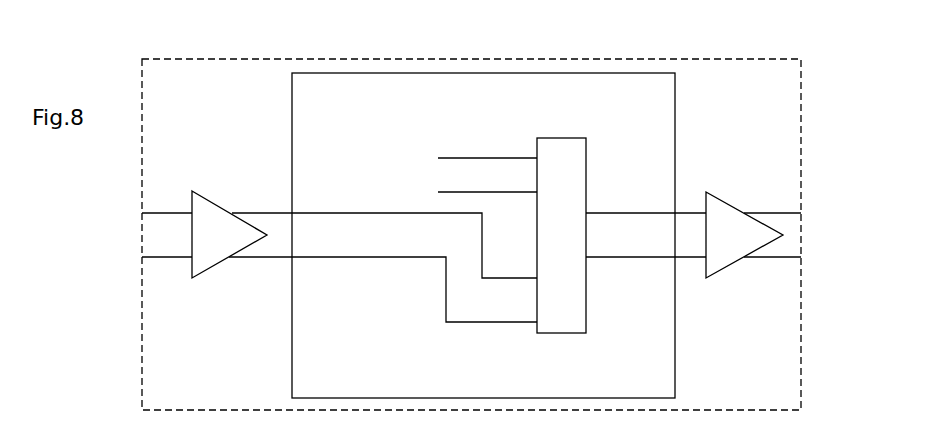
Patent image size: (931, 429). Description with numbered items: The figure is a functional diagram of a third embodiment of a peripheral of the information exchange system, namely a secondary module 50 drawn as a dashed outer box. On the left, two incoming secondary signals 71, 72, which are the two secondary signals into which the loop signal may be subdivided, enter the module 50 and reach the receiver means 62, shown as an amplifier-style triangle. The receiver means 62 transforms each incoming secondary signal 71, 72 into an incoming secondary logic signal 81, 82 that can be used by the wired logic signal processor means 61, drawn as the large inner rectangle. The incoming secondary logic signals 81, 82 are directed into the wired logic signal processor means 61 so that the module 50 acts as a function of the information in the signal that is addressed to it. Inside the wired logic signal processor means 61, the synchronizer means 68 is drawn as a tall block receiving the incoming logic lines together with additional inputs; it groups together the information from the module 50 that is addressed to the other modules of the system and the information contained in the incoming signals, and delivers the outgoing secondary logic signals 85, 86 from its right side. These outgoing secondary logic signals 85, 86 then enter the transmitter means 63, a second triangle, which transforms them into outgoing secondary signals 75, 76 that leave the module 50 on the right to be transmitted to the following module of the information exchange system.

The secondary module 50 is at (620, 59).
The wired logic signal processor means 61 is at (407, 72).
The receiver means 62 is at (210, 212).
The transmitter means 63 is at (727, 248).
The synchronizer means 68 is at (577, 303).
The incoming secondary signal 71 is at (176, 212).
The incoming secondary signal 72 is at (160, 258).
The outgoing secondary signal 75 is at (785, 212).
The outgoing secondary signal 76 is at (780, 258).
The incoming secondary logic signal 81 is at (273, 212).
The incoming secondary logic signal 82 is at (257, 258).
The outgoing secondary logic signal 85 is at (688, 212).
The outgoing secondary logic signal 86 is at (690, 258).